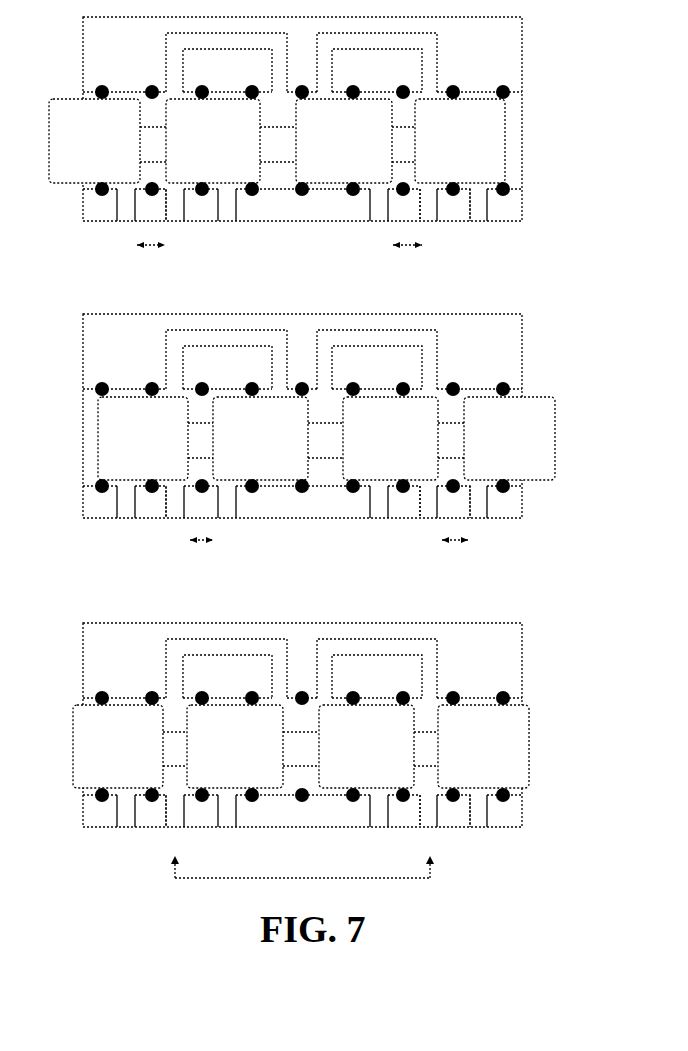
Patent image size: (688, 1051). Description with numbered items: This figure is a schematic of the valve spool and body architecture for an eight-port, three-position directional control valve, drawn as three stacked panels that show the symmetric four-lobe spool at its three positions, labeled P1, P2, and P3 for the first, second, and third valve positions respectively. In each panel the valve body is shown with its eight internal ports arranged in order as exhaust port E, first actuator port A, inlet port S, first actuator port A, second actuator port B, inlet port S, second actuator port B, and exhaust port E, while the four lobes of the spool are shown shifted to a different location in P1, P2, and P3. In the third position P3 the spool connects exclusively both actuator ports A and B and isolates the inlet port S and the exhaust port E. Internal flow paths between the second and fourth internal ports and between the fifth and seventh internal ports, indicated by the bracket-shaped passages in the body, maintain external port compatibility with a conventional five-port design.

The first valve position P1 is at (262, 136).
The second valve position P2 is at (277, 432).
The third valve position P3 is at (267, 750).